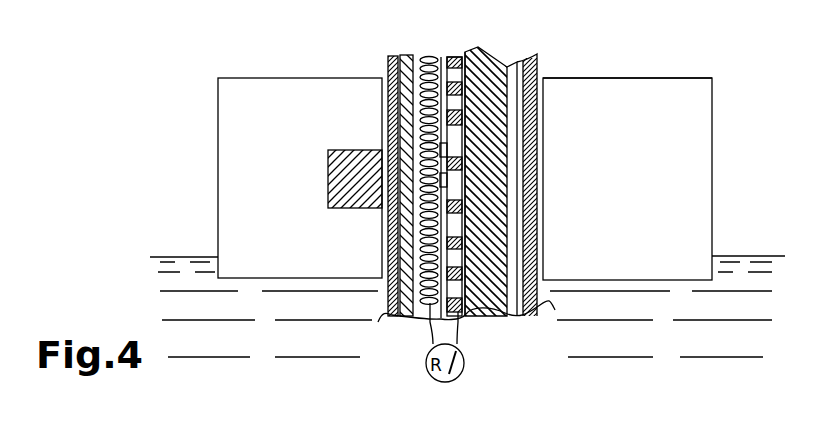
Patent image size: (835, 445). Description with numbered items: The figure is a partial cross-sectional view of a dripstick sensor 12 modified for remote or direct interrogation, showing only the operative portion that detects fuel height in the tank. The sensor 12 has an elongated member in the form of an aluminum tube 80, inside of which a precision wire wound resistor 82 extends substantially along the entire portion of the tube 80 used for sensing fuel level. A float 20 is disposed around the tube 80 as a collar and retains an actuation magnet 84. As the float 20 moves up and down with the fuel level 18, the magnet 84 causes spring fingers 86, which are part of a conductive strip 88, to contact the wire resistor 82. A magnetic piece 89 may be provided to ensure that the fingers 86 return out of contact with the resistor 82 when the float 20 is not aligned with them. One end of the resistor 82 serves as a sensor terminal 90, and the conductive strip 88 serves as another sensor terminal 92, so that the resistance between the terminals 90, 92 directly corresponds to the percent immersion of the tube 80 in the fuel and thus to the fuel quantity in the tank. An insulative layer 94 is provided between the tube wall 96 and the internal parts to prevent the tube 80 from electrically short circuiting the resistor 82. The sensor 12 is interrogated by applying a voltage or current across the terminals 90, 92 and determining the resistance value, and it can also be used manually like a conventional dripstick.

The sensor 12 is at (668, 58).
The fuel level 18 is at (738, 252).
The float 20 is at (698, 148).
The aluminum tube 80 is at (537, 297).
The precision wire wound resistor 82 is at (418, 42).
The actuation magnet 84 is at (322, 180).
The spring fingers 86 is at (440, 173).
The conductive strip 88 is at (452, 42).
The magnetic piece 89 is at (480, 77).
The sensor terminal 90 is at (425, 338).
The sensor terminal 92 is at (482, 338).
The insulative layer 94 is at (388, 318).
The tube wall 96 is at (380, 295).